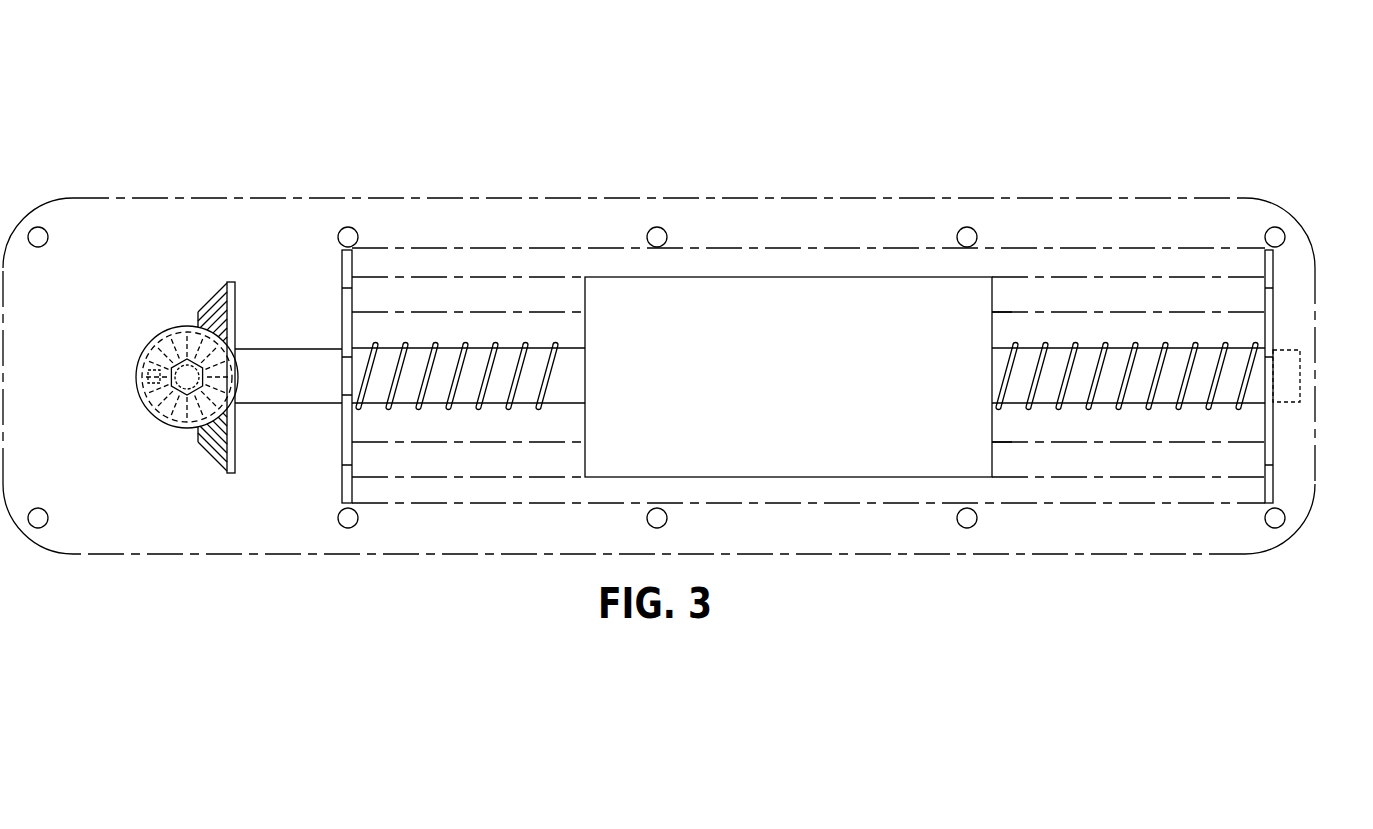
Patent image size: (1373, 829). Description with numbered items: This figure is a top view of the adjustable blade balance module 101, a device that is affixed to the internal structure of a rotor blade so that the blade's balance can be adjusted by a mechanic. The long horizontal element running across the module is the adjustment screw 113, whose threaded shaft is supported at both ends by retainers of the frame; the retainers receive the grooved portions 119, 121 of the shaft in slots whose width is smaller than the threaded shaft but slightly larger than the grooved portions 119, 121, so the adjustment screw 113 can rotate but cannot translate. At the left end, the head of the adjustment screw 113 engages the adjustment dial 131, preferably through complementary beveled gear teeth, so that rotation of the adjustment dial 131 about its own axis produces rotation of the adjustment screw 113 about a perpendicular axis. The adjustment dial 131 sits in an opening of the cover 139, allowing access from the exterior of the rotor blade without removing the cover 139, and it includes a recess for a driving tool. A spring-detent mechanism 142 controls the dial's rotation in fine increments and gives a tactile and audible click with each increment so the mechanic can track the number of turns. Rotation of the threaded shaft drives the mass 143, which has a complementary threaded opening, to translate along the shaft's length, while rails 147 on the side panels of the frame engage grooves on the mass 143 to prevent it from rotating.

The adjustable blade balance module 101 is at (1012, 110).
The cover 139 is at (221, 197).
The adjustment dial 131 is at (145, 349).
The spring-detent mechanism 142 is at (146, 376).
The adjustment screw 113 is at (294, 412).
The grooved portion 119 is at (344, 360).
The mass 143 is at (788, 377).
The rails 147 is at (1010, 312).
The grooved portion 121 is at (1272, 400).